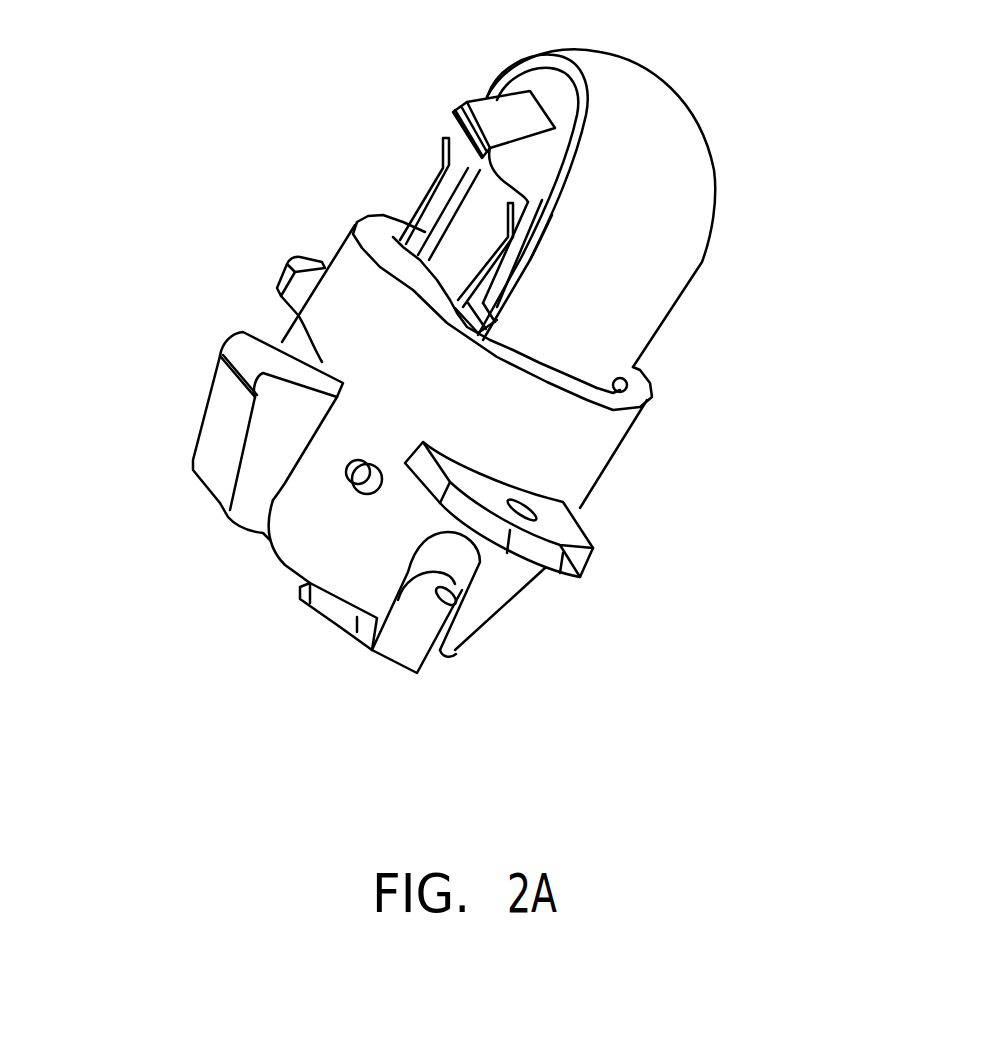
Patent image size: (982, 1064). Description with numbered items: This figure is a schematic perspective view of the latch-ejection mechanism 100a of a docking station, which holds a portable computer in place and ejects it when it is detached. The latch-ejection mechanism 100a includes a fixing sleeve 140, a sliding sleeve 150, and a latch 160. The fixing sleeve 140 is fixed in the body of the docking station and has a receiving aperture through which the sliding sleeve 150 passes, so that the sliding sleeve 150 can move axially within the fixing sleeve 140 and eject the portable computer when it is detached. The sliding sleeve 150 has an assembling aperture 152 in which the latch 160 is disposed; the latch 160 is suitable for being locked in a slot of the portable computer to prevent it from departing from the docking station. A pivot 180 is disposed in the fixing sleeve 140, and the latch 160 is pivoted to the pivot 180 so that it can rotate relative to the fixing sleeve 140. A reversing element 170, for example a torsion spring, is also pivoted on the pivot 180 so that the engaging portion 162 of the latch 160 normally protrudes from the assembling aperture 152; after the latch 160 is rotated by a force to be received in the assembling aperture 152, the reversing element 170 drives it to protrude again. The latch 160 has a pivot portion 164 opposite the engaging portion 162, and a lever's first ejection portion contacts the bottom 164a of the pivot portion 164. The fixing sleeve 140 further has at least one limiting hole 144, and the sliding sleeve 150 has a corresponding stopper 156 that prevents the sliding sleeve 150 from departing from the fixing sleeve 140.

The latch-ejection mechanism 100a is at (878, 792).
The fixing sleeve 140 is at (619, 507).
The limiting hole 144 is at (453, 588).
The sliding sleeve 150 is at (674, 208).
The assembling aperture 152 is at (552, 175).
The stopper 156 is at (407, 653).
The latch 160 is at (93, 20).
The engaging portion 162 is at (488, 113).
The pivot portion 164 is at (213, 331).
The bottom of the pivot portion 164a is at (231, 537).
The reversing element 170 is at (470, 303).
The pivot 180 is at (365, 487).